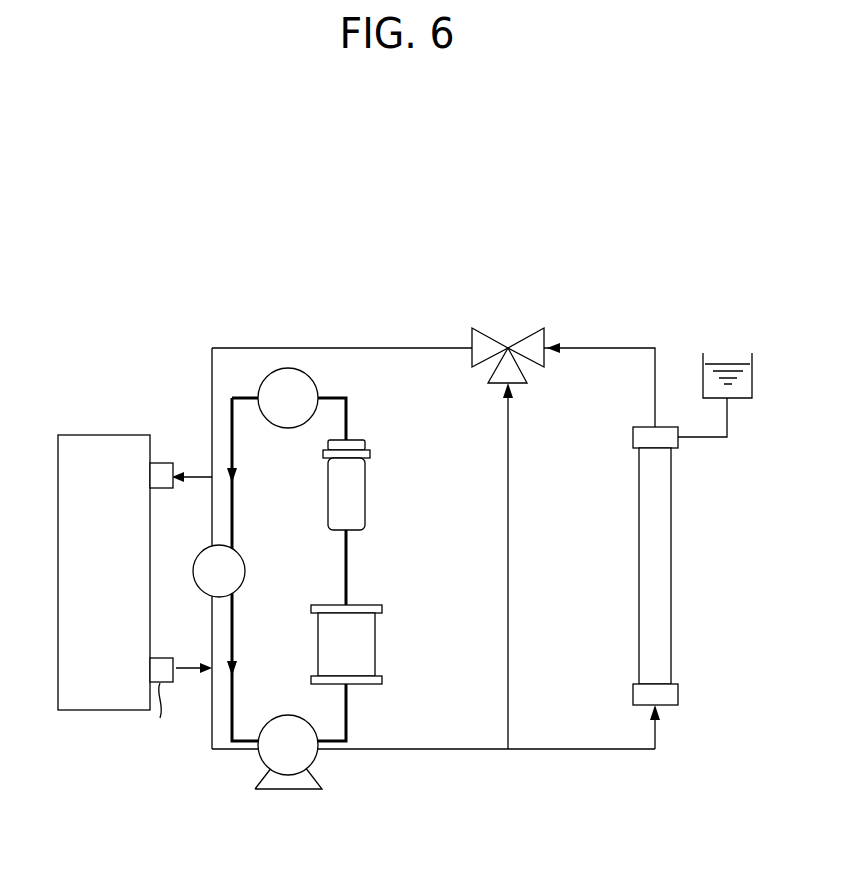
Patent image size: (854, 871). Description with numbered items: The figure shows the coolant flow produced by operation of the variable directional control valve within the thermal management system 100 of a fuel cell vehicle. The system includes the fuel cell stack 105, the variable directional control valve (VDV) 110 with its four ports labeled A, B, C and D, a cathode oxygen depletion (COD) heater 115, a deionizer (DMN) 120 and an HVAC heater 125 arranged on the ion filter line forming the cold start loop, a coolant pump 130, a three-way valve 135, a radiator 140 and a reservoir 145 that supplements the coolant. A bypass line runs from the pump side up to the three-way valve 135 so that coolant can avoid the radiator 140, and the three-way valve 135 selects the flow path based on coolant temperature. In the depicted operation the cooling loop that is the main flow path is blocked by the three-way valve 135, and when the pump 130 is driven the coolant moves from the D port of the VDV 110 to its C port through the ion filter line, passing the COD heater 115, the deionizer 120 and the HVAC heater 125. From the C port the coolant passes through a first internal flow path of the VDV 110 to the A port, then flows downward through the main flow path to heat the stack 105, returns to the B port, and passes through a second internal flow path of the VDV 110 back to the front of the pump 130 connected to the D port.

The thermal management system 100 is at (133, 268).
The fuel cell stack 105 is at (88, 711).
The variable directional control valve 110 is at (245, 571).
The cathode oxygen depletion heater 115 is at (287, 366).
The deionizer 120 is at (366, 490).
The HVAC heater 125 is at (376, 640).
The coolant pump 130 is at (288, 790).
The 3-way valve 135 is at (528, 380).
The radiator 140 is at (672, 565).
The reservoir 145 is at (740, 402).